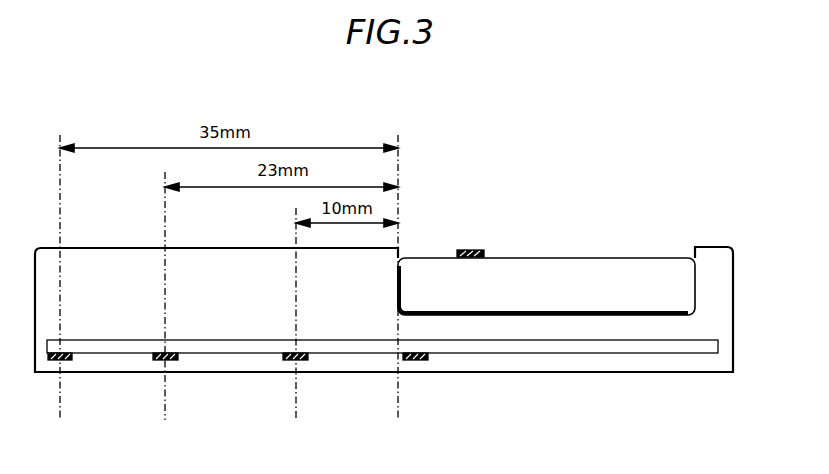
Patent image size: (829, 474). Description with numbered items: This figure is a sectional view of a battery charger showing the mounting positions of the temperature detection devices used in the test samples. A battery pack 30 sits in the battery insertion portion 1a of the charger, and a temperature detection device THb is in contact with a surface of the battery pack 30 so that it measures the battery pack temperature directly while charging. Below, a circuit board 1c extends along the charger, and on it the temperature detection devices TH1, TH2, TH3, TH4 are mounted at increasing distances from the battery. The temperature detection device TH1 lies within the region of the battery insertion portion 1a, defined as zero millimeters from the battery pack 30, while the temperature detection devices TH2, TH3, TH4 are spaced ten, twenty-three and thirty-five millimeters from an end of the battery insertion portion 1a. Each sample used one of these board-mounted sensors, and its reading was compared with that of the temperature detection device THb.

The battery insertion portion 1a is at (696, 296).
The circuit board 1c is at (676, 358).
The battery pack 30 is at (593, 226).
The temperature detection device THb is at (482, 250).
The temperature detection device TH1 is at (424, 360).
The temperature detection device TH2 is at (304, 360).
The temperature detection device TH3 is at (174, 360).
The temperature detection device TH4 is at (68, 360).